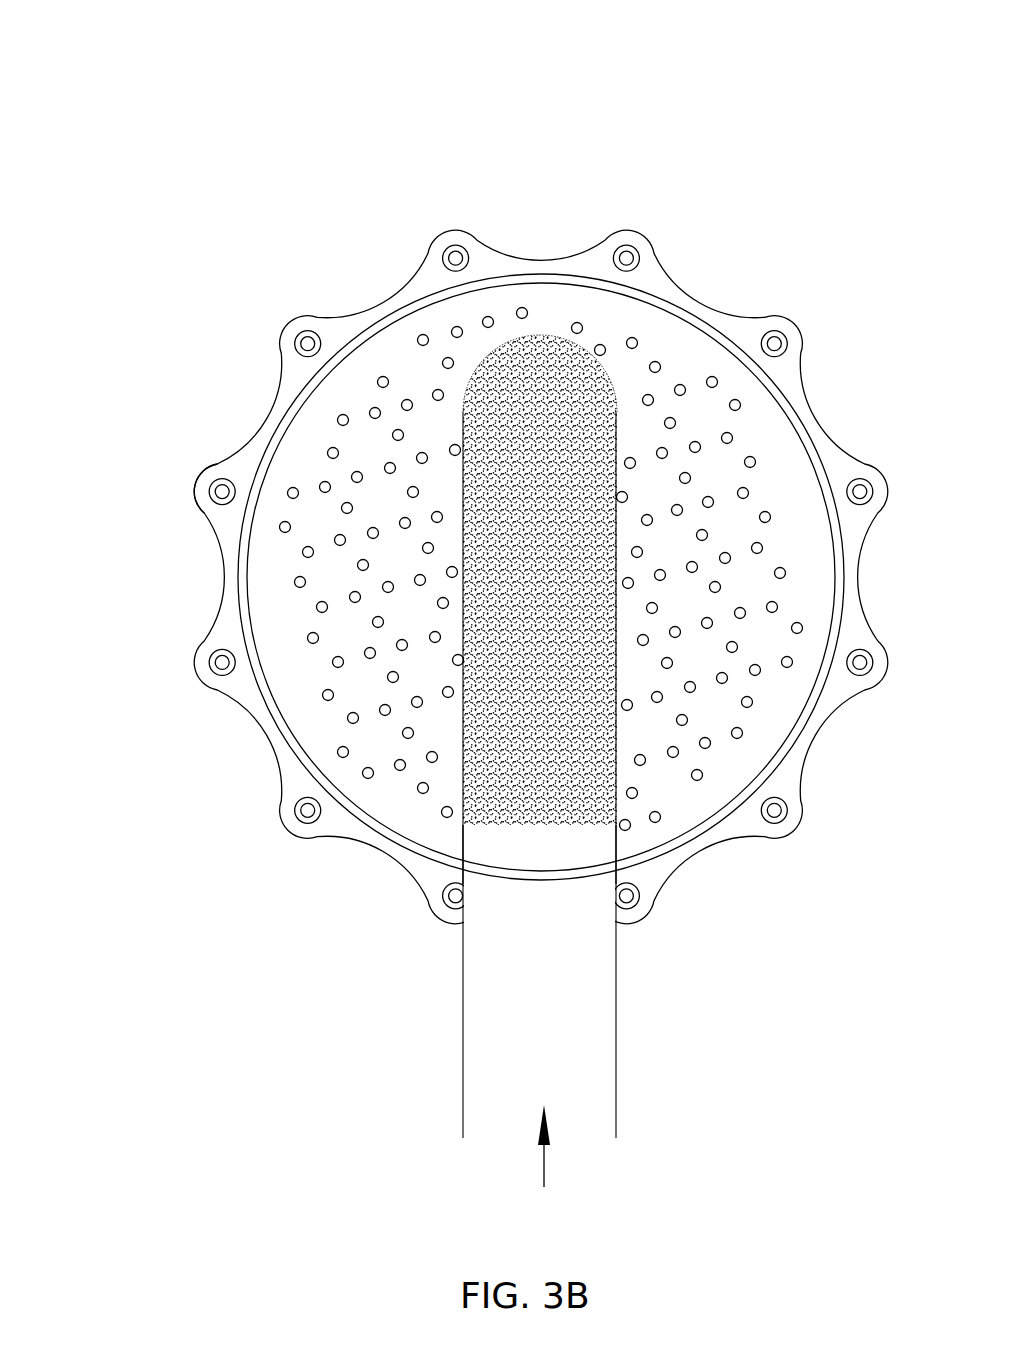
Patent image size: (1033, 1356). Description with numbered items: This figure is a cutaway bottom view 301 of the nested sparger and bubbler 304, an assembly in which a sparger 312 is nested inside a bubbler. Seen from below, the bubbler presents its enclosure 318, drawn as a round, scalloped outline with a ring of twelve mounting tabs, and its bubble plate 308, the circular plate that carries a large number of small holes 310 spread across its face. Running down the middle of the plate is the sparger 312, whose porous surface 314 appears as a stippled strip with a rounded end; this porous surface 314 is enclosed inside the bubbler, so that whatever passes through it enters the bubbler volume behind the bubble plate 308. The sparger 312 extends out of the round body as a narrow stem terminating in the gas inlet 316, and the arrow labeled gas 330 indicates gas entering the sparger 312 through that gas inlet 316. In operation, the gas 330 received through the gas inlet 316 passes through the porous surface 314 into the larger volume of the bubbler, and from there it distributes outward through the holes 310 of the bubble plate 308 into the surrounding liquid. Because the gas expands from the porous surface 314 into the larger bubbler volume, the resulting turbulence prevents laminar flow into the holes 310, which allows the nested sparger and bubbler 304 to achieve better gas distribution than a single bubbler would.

The cutaway bottom view 301 is at (150, 79).
The nested sparger and bubbler 304 is at (283, 332).
The bubble plate 308 is at (430, 318).
The holes 310 is at (533, 303).
The sparger 312 is at (503, 836).
The porous surface 314 is at (533, 353).
The gas inlet 316 is at (605, 1066).
The enclosure 318 is at (223, 468).
The gas 330 is at (542, 1167).